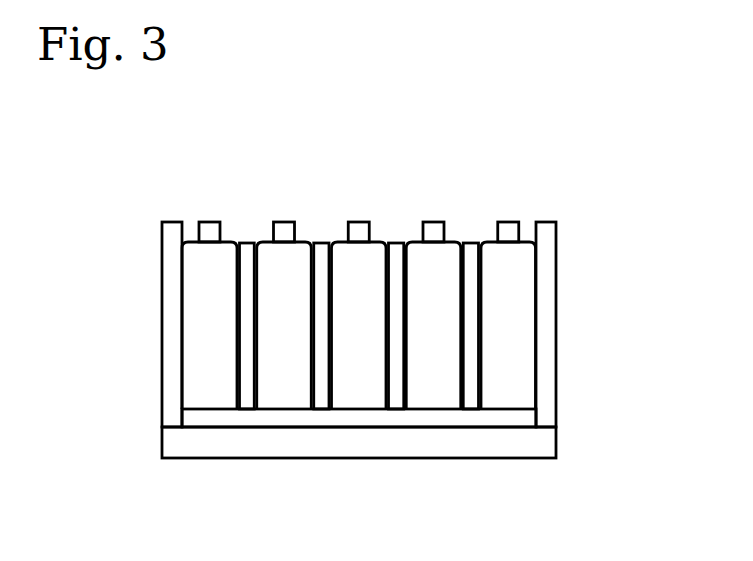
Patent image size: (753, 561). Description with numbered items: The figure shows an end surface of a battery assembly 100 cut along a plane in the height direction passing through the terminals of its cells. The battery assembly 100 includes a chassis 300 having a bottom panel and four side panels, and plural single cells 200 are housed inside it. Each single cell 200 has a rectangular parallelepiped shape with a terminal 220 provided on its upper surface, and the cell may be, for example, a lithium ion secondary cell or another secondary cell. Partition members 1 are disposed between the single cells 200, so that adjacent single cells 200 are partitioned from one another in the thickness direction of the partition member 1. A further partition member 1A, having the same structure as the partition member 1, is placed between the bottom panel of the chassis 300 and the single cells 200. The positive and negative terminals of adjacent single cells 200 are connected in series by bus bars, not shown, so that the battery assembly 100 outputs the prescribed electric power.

The battery assembly 100 is at (617, 182).
The single cell 200 is at (210, 411).
The terminal 220 is at (214, 222).
The partition member 1 is at (246, 403).
The partition member 1A is at (532, 418).
The chassis 300 is at (162, 345).